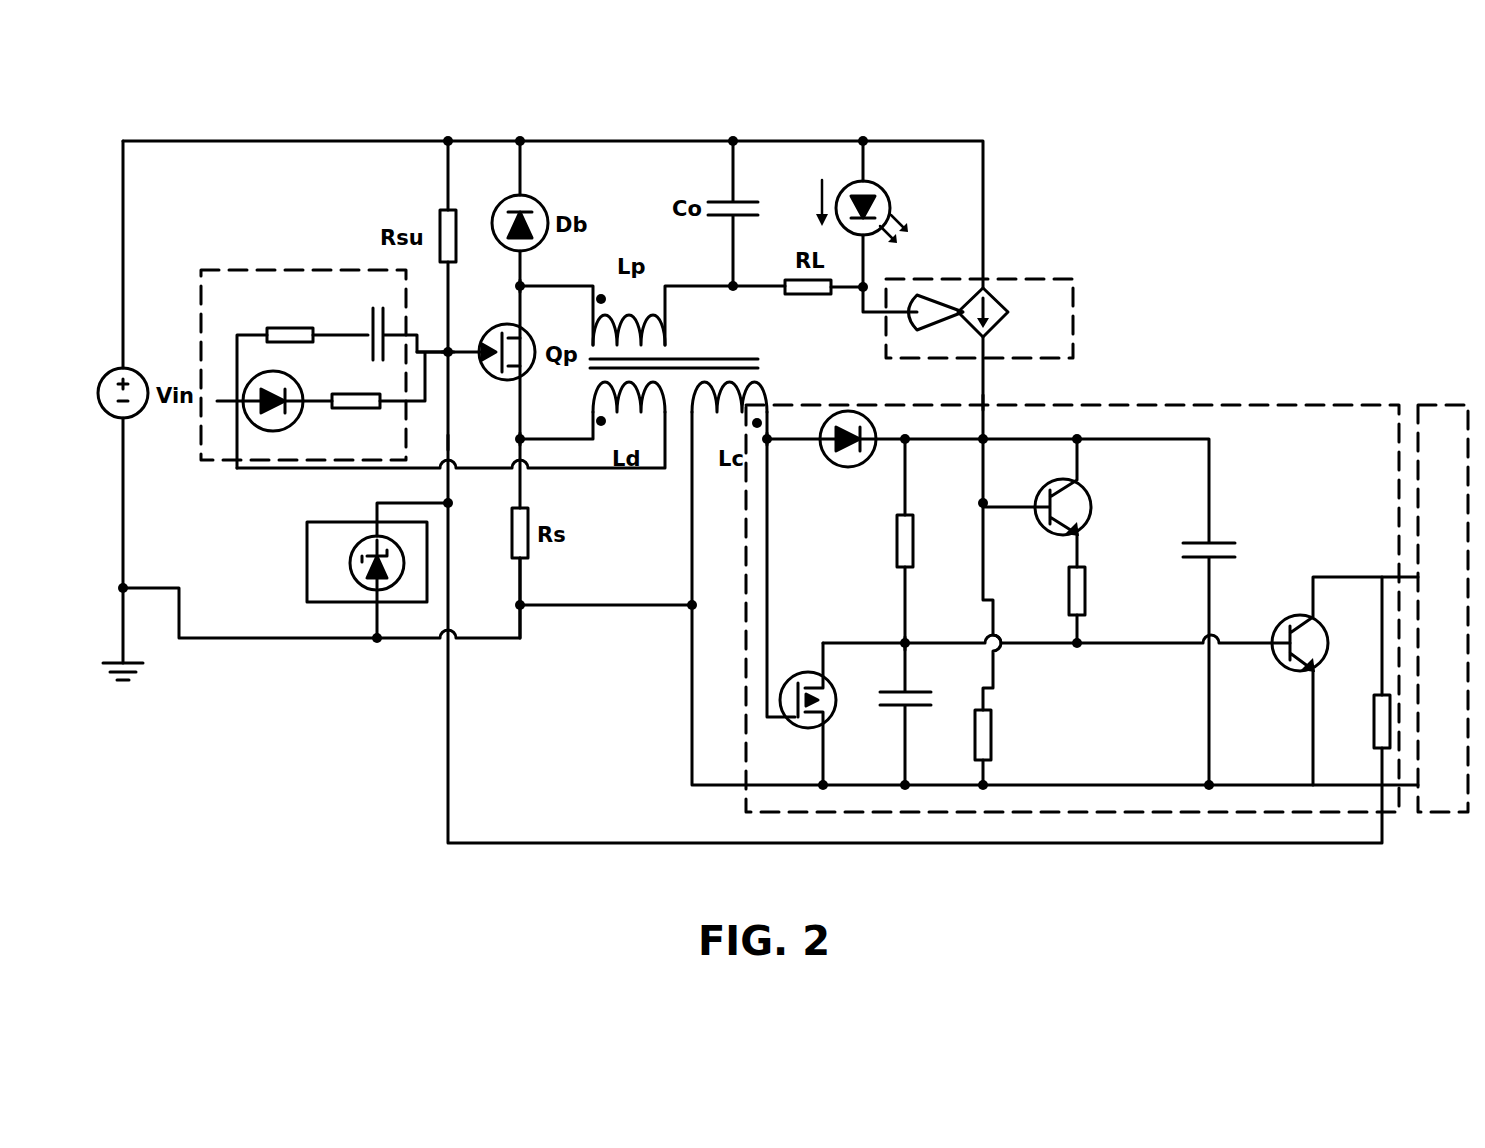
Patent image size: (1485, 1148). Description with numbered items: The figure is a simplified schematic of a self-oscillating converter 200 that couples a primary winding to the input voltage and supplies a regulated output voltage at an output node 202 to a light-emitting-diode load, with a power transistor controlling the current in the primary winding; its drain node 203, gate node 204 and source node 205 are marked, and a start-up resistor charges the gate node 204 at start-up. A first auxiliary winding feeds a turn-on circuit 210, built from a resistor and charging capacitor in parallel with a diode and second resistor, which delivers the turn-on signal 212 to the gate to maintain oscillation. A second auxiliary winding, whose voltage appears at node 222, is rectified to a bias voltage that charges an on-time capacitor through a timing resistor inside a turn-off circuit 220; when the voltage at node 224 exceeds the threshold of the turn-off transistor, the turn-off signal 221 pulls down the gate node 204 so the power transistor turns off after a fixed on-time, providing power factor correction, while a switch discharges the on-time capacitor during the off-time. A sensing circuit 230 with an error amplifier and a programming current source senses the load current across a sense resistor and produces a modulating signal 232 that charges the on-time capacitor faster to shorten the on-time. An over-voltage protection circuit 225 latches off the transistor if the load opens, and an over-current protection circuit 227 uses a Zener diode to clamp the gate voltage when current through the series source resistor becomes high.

The self-oscillating converter 200 is at (1221, 80).
The output node Vout / LED load 202 is at (784, 123).
The drain node 203 is at (523, 285).
The gate node 204 is at (451, 350).
The source node 205 is at (523, 438).
The turn-on circuit 210 is at (248, 268).
The turn-on signal 212 is at (431, 352).
The turn-off circuit 220 is at (1314, 404).
The turn-off signal 221 is at (451, 442).
The node 222 is at (769, 445).
The node 224 is at (910, 641).
The over-voltage protection circuit 225 is at (1436, 404).
The over-current protection circuit 227 is at (306, 532).
The sensing circuit 230 is at (1038, 266).
The modulating signal 232 is at (988, 400).